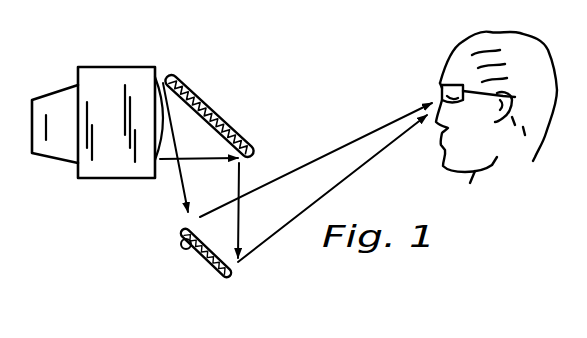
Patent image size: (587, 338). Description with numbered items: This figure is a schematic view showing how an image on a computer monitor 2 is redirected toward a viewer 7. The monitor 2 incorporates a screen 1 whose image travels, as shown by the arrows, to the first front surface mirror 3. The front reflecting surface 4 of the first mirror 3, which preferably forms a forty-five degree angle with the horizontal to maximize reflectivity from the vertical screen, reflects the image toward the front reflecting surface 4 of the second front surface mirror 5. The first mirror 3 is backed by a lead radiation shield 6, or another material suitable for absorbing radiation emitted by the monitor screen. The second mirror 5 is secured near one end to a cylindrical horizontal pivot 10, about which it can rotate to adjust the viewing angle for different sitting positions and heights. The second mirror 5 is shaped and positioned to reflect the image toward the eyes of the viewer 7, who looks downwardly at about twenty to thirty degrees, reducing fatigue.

The screen 1 is at (163, 113).
The computer monitor 2 is at (93, 122).
The first front surface mirror 3 is at (250, 157).
The front reflecting surface 4 is at (217, 138).
The second front surface mirror 5 is at (227, 278).
The lead radiation shield 6 is at (228, 123).
The viewer 7 is at (436, 58).
The cylindrical horizontal pivot 10 is at (183, 248).